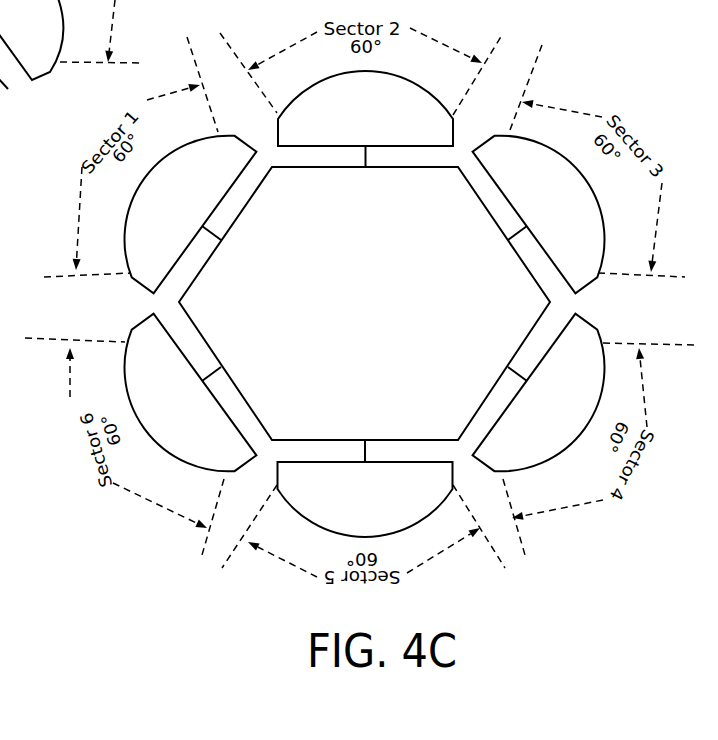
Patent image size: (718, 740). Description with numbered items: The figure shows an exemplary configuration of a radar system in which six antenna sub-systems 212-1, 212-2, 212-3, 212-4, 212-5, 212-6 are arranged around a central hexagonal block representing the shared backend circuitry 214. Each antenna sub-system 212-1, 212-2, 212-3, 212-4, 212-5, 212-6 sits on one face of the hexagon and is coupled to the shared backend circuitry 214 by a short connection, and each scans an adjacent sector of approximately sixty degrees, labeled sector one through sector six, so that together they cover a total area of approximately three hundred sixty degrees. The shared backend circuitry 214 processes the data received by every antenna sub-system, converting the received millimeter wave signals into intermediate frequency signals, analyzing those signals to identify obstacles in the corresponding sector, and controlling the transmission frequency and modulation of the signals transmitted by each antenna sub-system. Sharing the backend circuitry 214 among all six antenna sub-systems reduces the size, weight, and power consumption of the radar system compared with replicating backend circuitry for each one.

The shared backend circuitry 214 is at (395, 358).
The antenna sub-system 212-1 is at (146, 210).
The antenna sub-system 212-2 is at (342, 126).
The antenna sub-system 212-3 is at (530, 213).
The antenna sub-system 212-4 is at (524, 418).
The antenna sub-system 212-5 is at (340, 504).
The antenna sub-system 212-6 is at (146, 418).